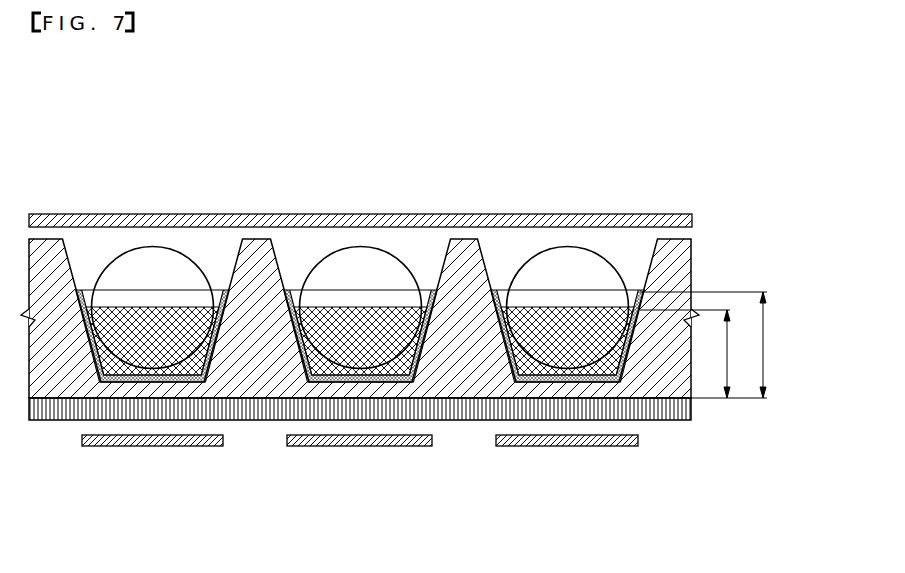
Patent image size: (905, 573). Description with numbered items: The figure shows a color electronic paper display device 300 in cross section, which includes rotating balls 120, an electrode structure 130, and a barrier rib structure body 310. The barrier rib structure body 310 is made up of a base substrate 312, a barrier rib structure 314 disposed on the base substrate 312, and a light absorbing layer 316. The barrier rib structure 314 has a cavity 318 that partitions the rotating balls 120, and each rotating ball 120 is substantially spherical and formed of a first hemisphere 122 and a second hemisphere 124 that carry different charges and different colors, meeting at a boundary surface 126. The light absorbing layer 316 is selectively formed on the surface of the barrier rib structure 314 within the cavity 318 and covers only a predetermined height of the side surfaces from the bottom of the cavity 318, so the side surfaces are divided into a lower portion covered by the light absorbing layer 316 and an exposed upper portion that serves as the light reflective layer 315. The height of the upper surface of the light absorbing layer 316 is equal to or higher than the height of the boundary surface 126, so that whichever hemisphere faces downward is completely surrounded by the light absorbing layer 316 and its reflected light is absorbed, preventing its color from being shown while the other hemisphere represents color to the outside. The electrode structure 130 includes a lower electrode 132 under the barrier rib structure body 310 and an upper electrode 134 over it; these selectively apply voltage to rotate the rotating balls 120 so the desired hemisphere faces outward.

The color electronic paper display device 300 is at (74, 82).
The barrier rib structure body 310 is at (360, 351).
The base substrate 312 is at (198, 412).
The barrier rib structure 314 is at (132, 388).
The light absorbing layer 316 is at (77, 340).
The light reflective layer 315 is at (232, 270).
The cavity 318 is at (97, 290).
The rotating balls 120 is at (564, 239).
The first hemisphere 122 is at (563, 292).
The second hemisphere 124 is at (593, 308).
The boundary surface 126 is at (534, 302).
The electrode structure 130 is at (360, 383).
The lower electrode 132 is at (440, 506).
The upper electrode 134 is at (467, 227).